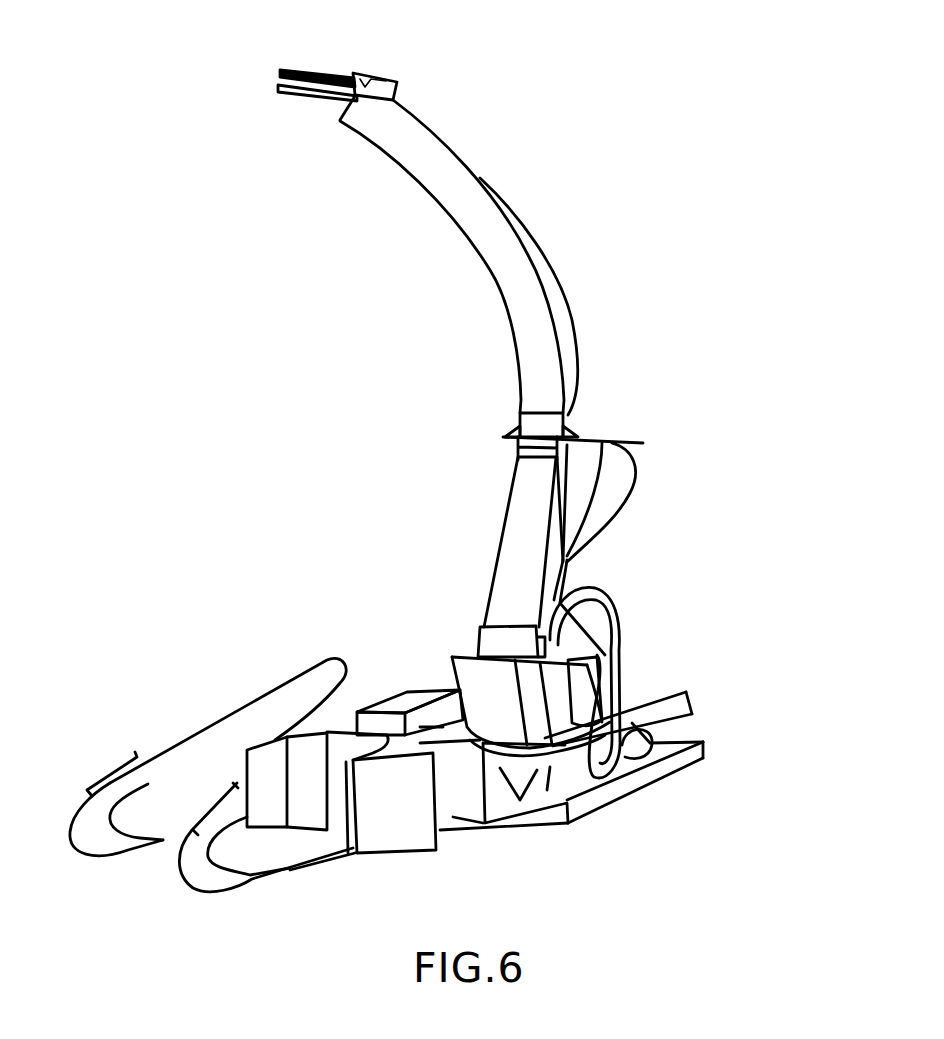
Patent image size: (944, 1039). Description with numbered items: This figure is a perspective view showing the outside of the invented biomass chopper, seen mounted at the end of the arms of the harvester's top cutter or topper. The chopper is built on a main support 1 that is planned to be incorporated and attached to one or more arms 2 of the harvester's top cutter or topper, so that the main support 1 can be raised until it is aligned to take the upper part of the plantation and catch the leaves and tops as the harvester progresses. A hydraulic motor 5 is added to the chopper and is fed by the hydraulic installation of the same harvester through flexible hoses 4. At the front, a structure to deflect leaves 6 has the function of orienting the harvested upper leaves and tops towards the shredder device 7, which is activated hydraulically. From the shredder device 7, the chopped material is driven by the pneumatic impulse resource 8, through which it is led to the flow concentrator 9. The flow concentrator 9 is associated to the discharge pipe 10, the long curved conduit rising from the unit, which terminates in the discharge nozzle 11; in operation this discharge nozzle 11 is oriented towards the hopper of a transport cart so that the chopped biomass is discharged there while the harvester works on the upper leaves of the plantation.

The main support 1 is at (540, 789).
The arms of the harvester's top cutter or topper 2 is at (690, 768).
The flexible hoses 4 is at (634, 469).
The hydraulic motor 5 is at (620, 705).
The structure to deflect leaves 6 is at (213, 713).
The shredder device 7 is at (317, 777).
The pneumatic impulse resource 8 is at (467, 677).
The flow concentrator 9 is at (510, 505).
The discharge pipe 10 is at (477, 192).
The discharge nozzle 11 is at (312, 72).